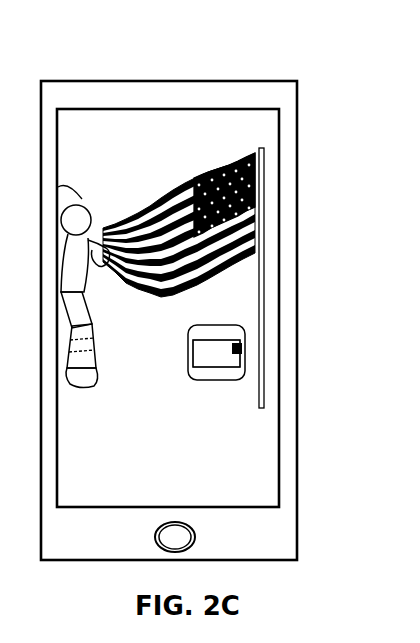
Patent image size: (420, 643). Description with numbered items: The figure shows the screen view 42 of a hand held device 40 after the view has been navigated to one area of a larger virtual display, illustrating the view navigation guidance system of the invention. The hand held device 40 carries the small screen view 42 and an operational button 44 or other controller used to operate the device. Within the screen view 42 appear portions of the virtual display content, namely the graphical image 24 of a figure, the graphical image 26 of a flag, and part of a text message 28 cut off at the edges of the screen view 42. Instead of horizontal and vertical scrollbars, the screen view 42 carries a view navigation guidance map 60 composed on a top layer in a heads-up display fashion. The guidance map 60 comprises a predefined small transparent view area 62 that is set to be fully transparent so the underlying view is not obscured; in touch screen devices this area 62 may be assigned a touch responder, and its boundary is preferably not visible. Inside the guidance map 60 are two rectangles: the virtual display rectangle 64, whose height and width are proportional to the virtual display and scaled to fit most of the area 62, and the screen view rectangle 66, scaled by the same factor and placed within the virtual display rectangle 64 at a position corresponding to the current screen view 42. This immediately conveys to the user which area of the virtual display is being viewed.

The hand held device 40 is at (167, 80).
The screen view 42 is at (108, 127).
The operational button 44 is at (155, 536).
The graphical image 24 is at (69, 195).
The graphical image 26 is at (223, 168).
The view navigation guidance map 60 is at (200, 340).
The transparent view area 62 is at (190, 372).
The virtual display rectangle 64 is at (222, 340).
The screen view rectangle 66 is at (233, 356).
The text message 28 is at (122, 453).